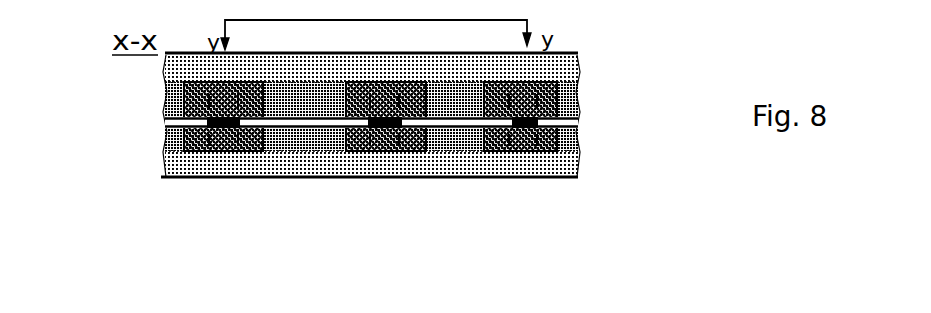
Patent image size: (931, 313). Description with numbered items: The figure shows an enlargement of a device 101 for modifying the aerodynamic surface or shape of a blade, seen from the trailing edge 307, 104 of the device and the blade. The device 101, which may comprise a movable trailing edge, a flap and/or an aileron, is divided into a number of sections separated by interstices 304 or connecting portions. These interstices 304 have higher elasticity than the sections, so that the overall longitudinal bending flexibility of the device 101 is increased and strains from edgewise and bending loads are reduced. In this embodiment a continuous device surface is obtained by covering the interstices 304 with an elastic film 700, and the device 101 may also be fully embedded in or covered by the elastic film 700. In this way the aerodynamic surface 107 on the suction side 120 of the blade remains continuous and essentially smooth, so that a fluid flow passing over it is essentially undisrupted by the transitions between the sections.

The suction side 120 is at (553, 53).
The aerodynamic surface 107 is at (563, 72).
The trailing edge 307 is at (573, 115).
The trailing edge 104 is at (431, 109).
The interstices 304 is at (210, 125).
The elastic film 700 is at (361, 141).
The device for modifying the aerodynamic surface or shape of the blade 101 is at (440, 140).